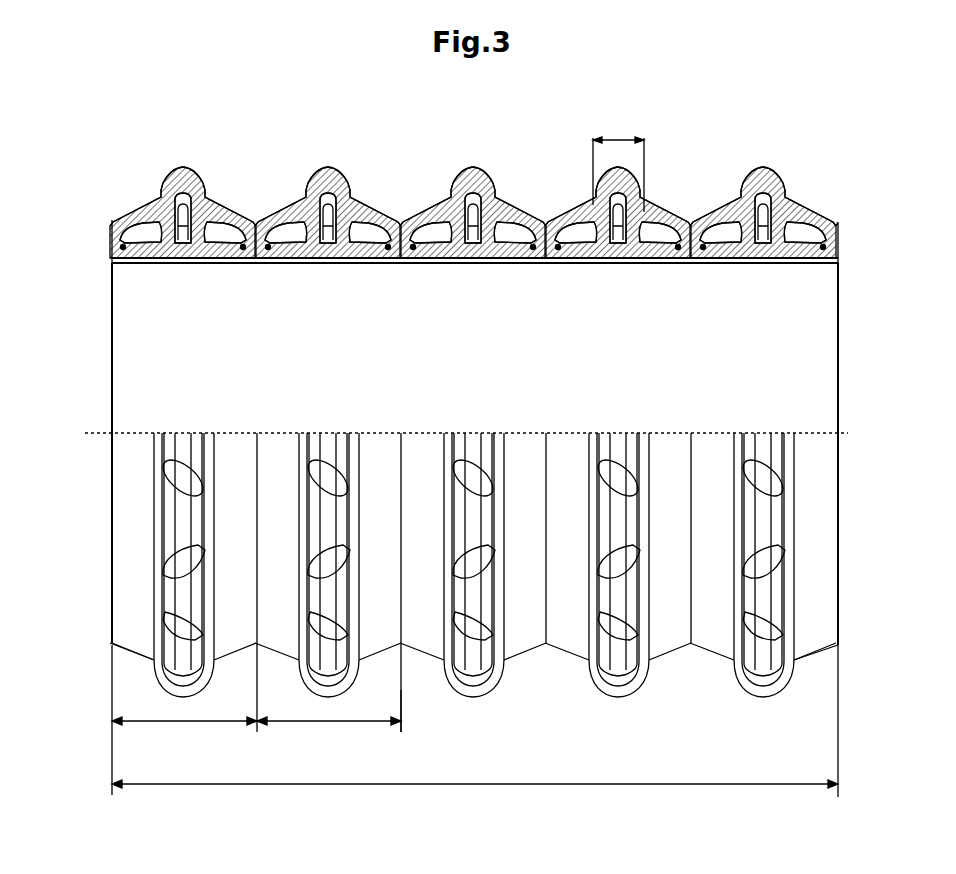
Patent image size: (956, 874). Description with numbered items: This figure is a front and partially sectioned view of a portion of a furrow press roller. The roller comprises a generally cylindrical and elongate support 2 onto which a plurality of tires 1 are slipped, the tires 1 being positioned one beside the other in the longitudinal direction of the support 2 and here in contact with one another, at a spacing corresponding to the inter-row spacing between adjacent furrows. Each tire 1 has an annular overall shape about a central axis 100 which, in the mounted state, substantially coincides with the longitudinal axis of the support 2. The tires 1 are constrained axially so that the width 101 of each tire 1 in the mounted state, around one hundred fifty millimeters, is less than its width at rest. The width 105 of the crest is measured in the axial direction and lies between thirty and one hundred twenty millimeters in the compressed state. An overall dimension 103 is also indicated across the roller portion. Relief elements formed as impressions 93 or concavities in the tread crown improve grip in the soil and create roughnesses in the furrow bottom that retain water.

The tire 1 is at (324, 148).
The support 2 is at (157, 265).
The impressions 93 is at (184, 472).
The central axis 100 is at (95, 433).
The width of the tire in the mounted state 101 is at (185, 722).
The total width 103 is at (468, 785).
The width of the crest 105 is at (620, 140).